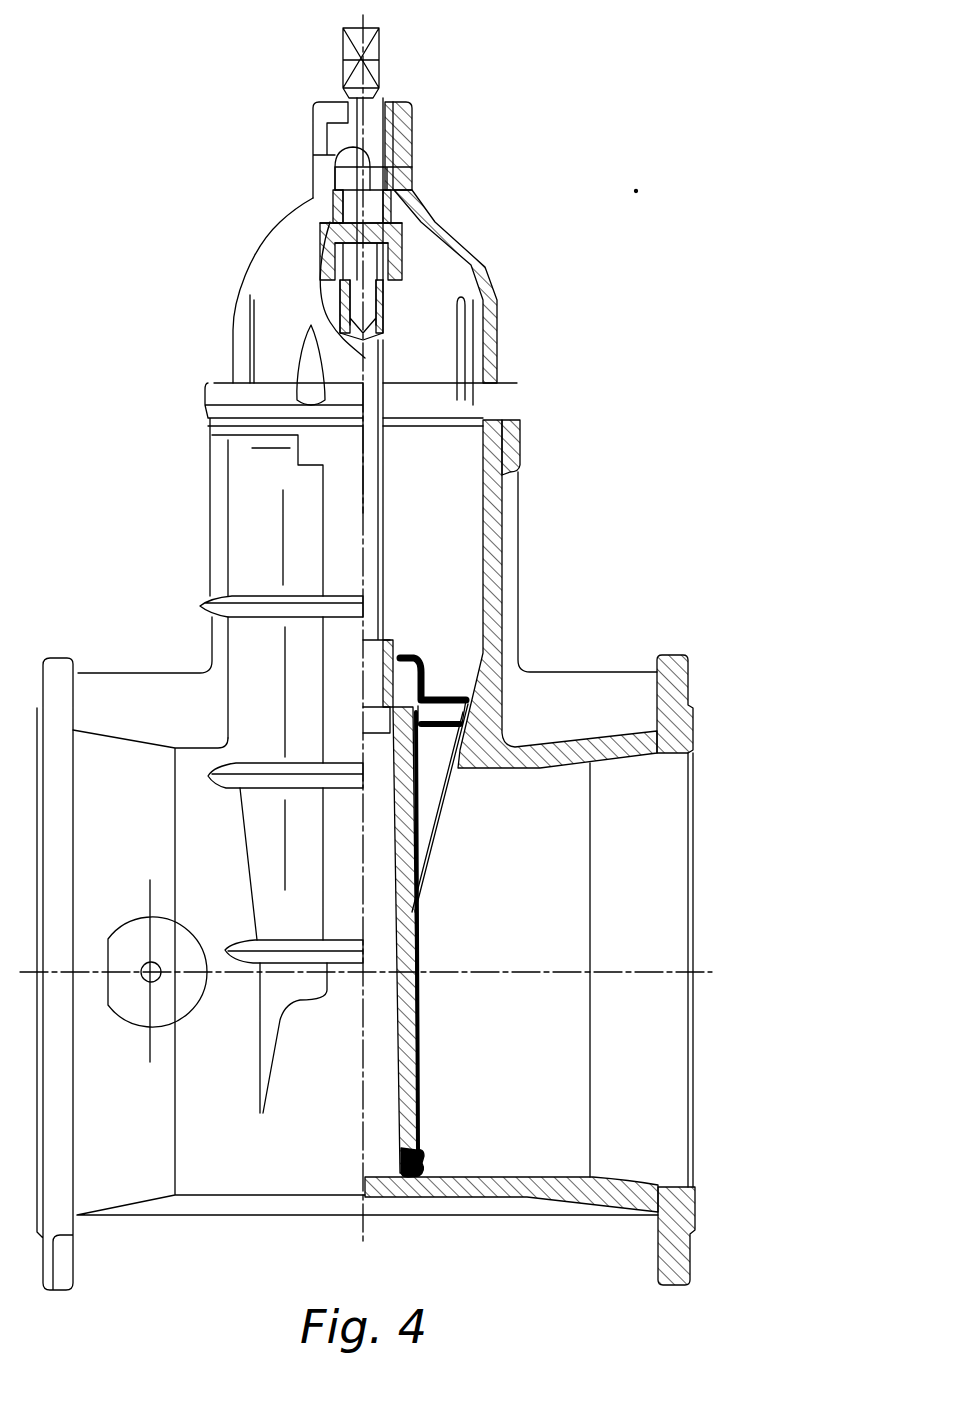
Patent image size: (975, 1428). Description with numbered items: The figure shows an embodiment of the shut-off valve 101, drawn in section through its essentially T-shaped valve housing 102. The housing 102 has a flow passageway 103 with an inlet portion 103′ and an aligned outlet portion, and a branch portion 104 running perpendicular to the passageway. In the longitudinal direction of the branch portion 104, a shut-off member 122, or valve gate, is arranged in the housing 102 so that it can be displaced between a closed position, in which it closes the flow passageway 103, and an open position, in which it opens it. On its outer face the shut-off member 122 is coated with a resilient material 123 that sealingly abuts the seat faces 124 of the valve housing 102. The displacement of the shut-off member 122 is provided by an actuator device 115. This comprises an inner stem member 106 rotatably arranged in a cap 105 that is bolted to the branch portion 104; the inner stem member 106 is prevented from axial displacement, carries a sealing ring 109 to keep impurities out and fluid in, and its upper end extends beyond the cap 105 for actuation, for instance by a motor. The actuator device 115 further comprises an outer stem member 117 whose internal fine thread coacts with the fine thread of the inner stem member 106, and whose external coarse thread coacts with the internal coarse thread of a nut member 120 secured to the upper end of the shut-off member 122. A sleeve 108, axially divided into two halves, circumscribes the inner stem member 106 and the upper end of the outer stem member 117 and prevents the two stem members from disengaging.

The shut-off valve 101 is at (250, 222).
The valve housing 102 is at (696, 671).
The flow passageway 103 is at (560, 1075).
The inlet portion 103′ is at (690, 1266).
The branch portion 104 is at (215, 500).
The cap 105 is at (268, 330).
The inner stem member 106 is at (374, 60).
The sleeve 108 is at (404, 258).
The sealing ring 109 is at (396, 143).
The actuator device 115 is at (406, 287).
The outer stem member 117 is at (372, 515).
The nut member 120 is at (400, 640).
The shut-off member 122 is at (400, 873).
The resilient material 123 is at (420, 1012).
The seat faces 124 is at (487, 1175).